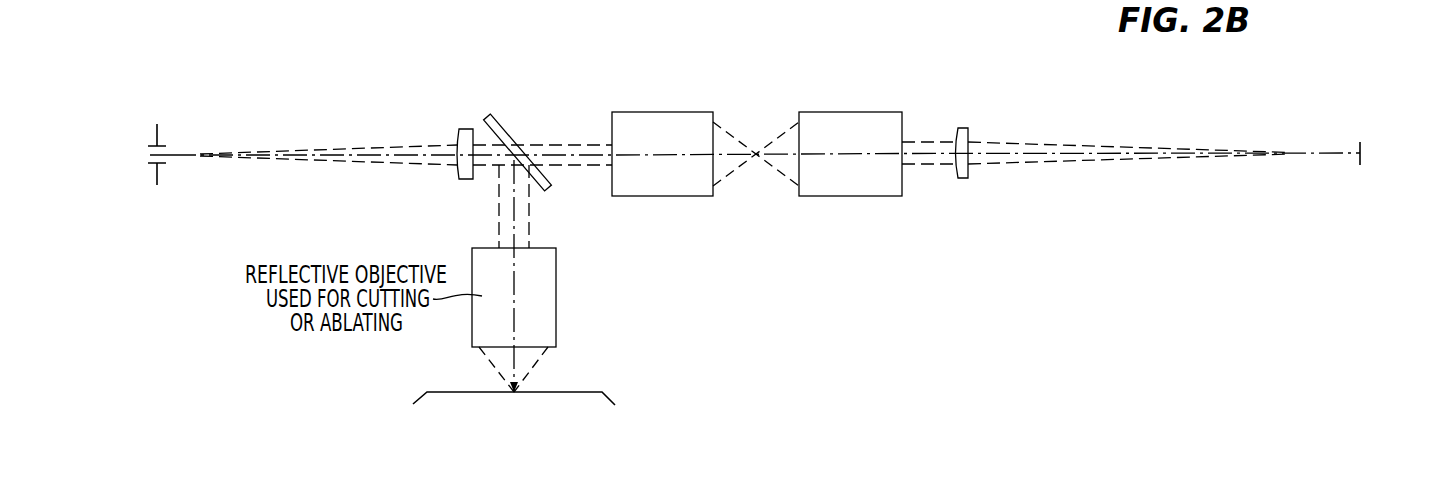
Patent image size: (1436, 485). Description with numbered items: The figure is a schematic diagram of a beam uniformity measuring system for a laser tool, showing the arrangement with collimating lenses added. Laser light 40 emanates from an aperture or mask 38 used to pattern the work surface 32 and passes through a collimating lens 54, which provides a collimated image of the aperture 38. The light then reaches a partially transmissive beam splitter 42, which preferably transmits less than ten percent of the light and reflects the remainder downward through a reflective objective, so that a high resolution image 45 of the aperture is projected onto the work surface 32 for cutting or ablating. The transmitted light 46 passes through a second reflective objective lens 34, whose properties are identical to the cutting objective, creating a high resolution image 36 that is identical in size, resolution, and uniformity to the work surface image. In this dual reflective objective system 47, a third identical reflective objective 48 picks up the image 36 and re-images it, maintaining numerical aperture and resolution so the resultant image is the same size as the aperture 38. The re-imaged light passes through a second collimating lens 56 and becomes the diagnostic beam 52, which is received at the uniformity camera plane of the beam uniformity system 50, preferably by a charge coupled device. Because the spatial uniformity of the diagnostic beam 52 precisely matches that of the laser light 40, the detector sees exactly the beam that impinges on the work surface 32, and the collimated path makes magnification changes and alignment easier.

The aperture or mask 38 is at (157, 124).
The laser light 40 is at (330, 163).
The collimating lens 54 is at (458, 132).
The partially transmissive beam splitter 42 is at (502, 118).
The transmitted light 46 is at (557, 143).
The dual reflective objective system 47 is at (771, 143).
The second reflective objective lens 34 is at (620, 196).
The third reflective objective lens 48 is at (903, 120).
The high resolution image of the aperture 36 is at (754, 162).
The collimating lens 56 is at (1008, 112).
The diagnostic beam 52 is at (1192, 147).
The beam uniformity system 50 is at (1417, 198).
The high resolution image of the aperture 45 is at (541, 386).
The work surface 32 is at (605, 392).